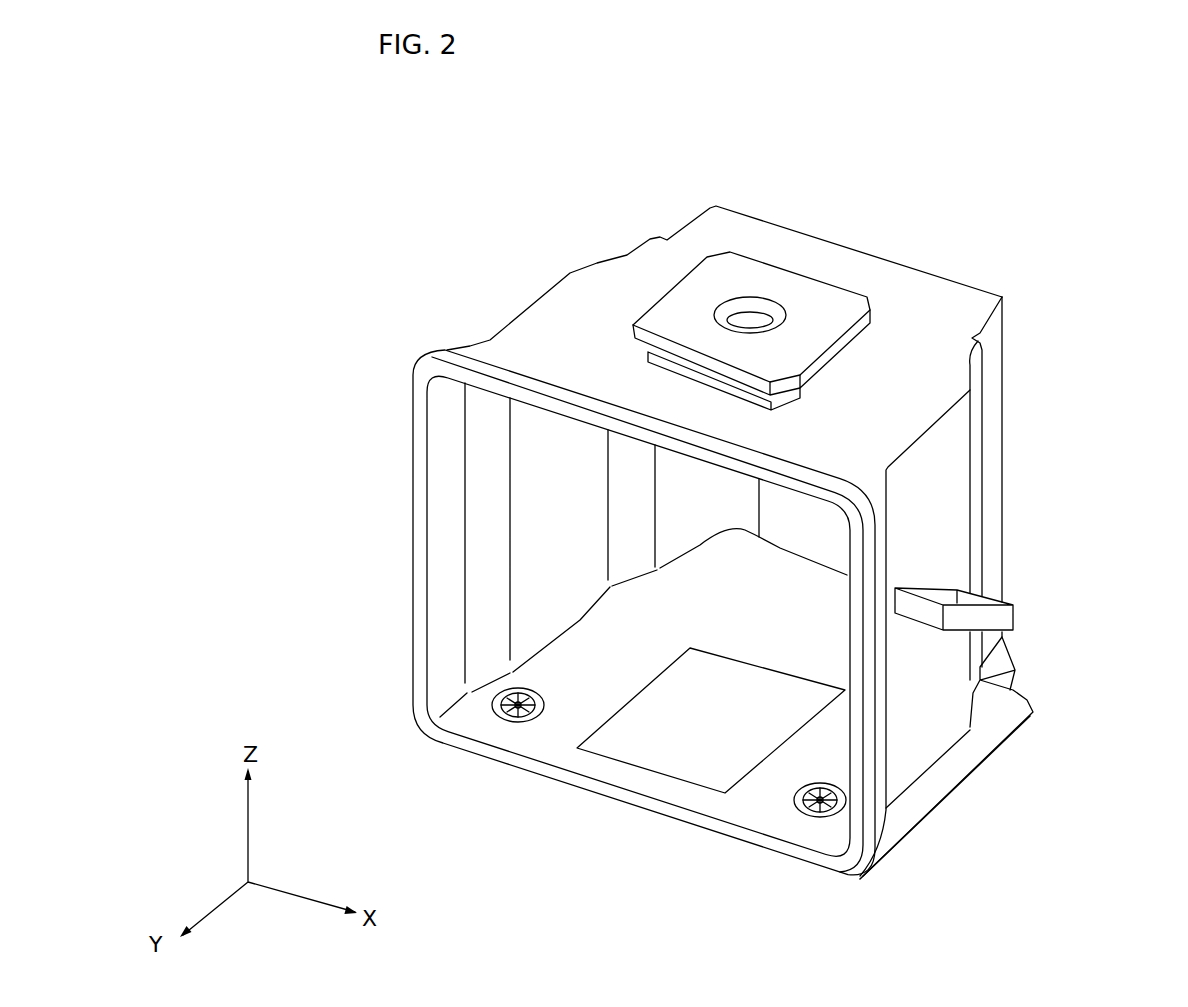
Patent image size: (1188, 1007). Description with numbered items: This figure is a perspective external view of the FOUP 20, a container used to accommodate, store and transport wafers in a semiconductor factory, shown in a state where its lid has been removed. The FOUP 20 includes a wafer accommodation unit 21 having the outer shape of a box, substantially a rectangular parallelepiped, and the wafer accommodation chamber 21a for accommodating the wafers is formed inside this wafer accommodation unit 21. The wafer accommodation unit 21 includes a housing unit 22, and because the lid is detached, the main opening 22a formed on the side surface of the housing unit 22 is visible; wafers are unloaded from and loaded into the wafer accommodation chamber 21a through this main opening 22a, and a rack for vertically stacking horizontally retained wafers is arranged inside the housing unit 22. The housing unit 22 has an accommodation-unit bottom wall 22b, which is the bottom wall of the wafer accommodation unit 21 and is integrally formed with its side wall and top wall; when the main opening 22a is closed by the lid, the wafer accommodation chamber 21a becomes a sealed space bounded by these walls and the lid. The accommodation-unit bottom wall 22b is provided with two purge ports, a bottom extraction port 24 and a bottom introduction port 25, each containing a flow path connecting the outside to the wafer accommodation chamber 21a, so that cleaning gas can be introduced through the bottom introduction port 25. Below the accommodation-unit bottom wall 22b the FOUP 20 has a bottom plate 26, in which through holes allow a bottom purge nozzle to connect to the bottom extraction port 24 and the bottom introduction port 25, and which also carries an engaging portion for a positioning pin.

The FOUP 20 is at (923, 218).
The wafer accommodation unit 21 is at (1033, 348).
The wafer accommodation chamber 21a is at (490, 570).
The housing unit 22 is at (585, 297).
The main opening 22a is at (787, 630).
The accommodation-unit bottom wall 22b is at (633, 673).
The bottom extraction port 24 is at (503, 710).
The bottom introduction port 25 is at (815, 812).
The bottom plate 26 is at (1013, 723).